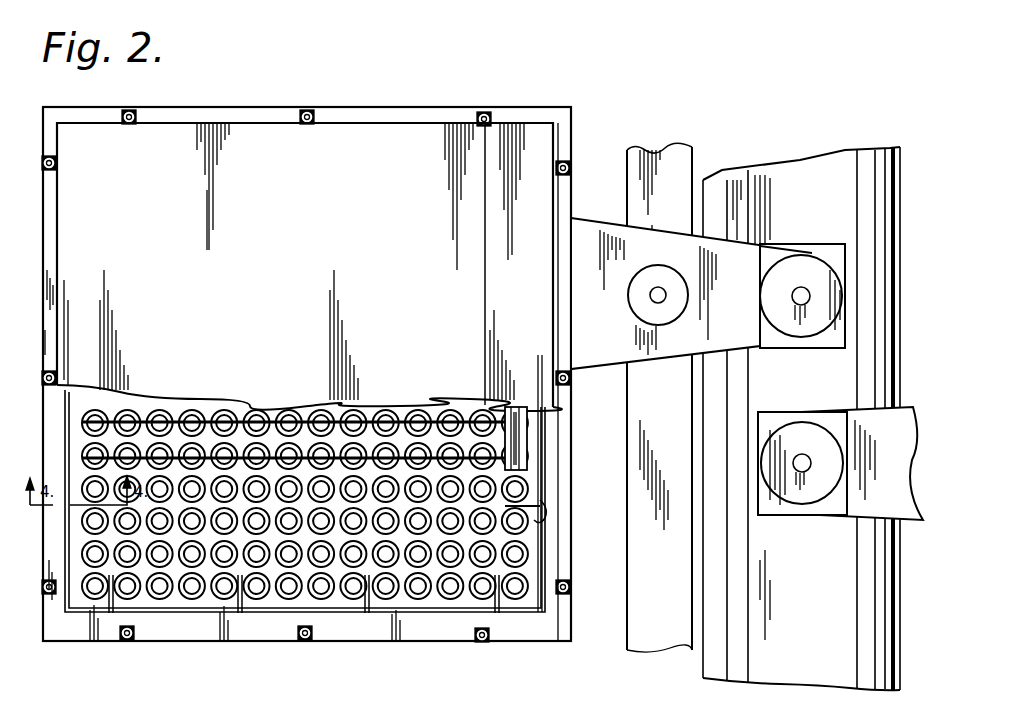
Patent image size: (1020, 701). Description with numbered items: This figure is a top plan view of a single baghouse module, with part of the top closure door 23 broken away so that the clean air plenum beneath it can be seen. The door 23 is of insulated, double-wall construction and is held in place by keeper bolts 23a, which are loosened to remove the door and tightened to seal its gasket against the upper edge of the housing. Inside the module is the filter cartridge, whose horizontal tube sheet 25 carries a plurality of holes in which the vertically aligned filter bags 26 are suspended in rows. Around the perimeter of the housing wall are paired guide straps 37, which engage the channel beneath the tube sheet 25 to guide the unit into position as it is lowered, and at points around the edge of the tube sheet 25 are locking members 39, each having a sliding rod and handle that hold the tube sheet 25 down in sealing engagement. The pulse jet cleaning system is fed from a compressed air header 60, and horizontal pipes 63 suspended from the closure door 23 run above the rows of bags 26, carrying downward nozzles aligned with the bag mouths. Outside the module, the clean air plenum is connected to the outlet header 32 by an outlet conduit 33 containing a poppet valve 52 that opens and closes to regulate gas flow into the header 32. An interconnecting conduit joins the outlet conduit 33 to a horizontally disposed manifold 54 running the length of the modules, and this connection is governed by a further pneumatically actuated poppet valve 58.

The top closure door 23 is at (410, 132).
The keeper bolts 23a is at (316, 112).
The tube sheet 25 is at (524, 606).
The filter bags 26 is at (386, 593).
The outlet header 32 is at (808, 170).
The outlet conduit 33 is at (612, 348).
The guide straps 37 is at (546, 520).
The locking members 39 is at (230, 600).
The poppet valve 52 is at (808, 262).
The manifold 54 is at (637, 425).
The poppet valve 58 is at (680, 294).
The compressed air header 60 is at (521, 406).
The horizontal pipes 63 is at (130, 420).